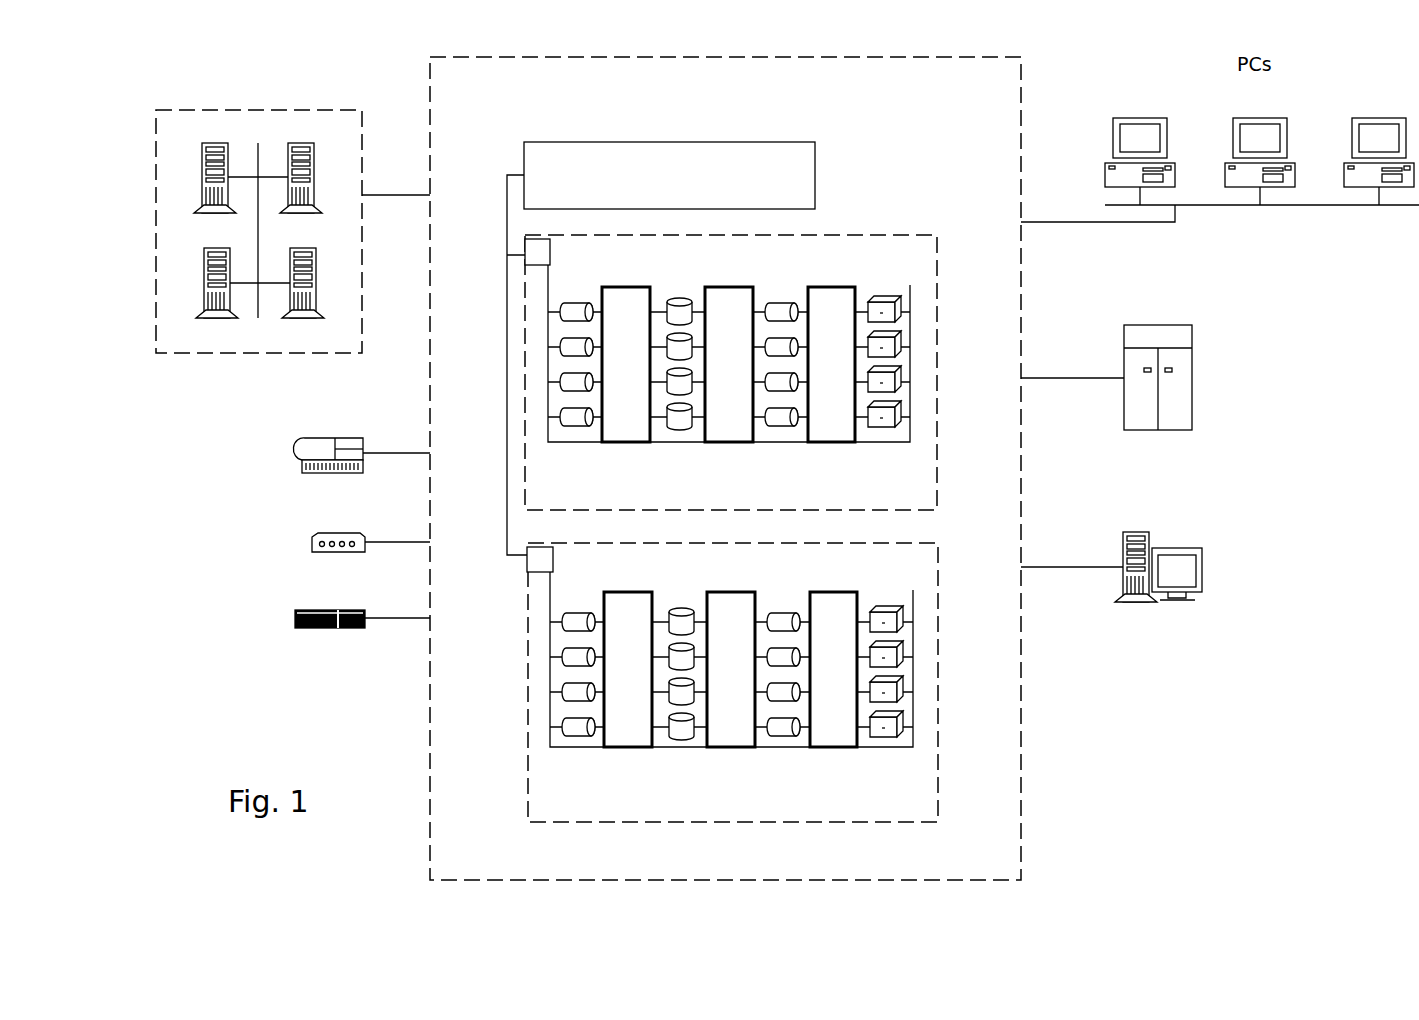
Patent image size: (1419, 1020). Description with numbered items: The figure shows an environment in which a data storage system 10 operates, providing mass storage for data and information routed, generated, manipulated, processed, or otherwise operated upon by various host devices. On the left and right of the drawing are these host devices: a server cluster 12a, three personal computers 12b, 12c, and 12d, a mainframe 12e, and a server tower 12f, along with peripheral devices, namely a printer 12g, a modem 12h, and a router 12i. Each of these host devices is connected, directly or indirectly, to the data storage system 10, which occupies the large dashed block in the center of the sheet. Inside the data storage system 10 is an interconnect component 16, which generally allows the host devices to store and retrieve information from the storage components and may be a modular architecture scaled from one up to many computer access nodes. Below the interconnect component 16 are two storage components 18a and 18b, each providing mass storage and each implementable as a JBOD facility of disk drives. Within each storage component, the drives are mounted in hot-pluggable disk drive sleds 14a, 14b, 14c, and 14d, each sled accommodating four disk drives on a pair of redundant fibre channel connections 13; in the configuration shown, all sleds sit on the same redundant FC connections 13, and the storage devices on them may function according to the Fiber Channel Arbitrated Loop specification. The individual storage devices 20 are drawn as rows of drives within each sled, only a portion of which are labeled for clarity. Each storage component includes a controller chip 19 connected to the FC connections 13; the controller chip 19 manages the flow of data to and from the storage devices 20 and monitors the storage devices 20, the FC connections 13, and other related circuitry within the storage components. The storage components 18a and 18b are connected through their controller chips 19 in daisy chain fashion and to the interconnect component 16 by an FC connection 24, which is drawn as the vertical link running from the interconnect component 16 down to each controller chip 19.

The data storage system 10 is at (725, 452).
The server cluster 12a is at (293, 208).
The personal computer 12b is at (1140, 149).
The personal computer 12c is at (1260, 149).
The personal computer 12d is at (1377, 149).
The mainframe 12e is at (1128, 377).
The server tower 12f is at (1126, 561).
The printer 12g is at (361, 439).
The modem 12h is at (371, 529).
The router 12i is at (362, 599).
The fibre channel connections 13 is at (826, 287).
The disk drive sled 14a is at (576, 531).
The disk drive sled 14b is at (678, 555).
The disk drive sled 14c is at (781, 555).
The disk drive sled 14d is at (884, 541).
The interconnect component 16 is at (683, 175).
The storage component 18a is at (751, 372).
The storage component 18b is at (753, 682).
The controller chip 19 is at (552, 405).
The storage devices 20 is at (886, 297).
The FC connection 24 is at (507, 210).